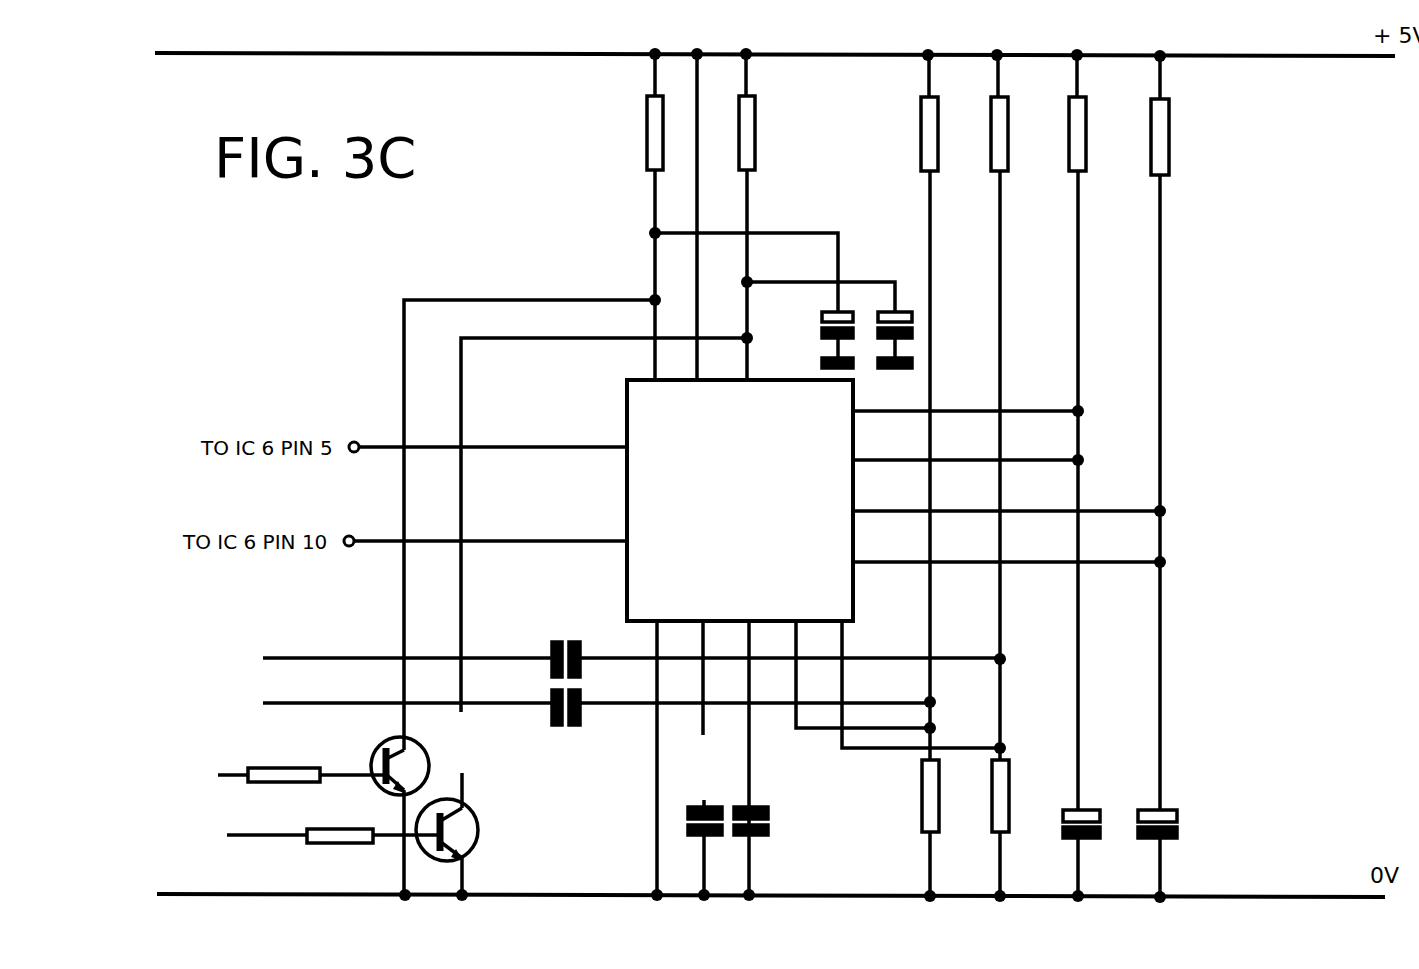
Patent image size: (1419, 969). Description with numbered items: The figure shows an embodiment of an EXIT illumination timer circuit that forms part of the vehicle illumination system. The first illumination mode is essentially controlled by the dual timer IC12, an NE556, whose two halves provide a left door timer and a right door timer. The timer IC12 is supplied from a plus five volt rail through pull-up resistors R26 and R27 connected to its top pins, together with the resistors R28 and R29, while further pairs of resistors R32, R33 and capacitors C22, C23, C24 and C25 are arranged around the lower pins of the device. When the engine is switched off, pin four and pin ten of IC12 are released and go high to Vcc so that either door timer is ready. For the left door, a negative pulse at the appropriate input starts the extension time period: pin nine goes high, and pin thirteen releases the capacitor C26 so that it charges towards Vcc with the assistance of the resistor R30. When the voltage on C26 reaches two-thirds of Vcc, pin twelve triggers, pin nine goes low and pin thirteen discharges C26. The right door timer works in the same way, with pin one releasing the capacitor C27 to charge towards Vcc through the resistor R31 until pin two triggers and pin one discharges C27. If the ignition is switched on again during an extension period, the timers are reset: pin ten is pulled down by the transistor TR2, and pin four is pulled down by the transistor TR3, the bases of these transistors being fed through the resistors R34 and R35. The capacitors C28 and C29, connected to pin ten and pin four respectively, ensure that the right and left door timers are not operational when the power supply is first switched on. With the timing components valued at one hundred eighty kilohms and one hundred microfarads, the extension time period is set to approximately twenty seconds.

The resistor 10K R26 is at (630, 217).
The resistor 10K R27 is at (771, 217).
The resistor 4K7 R28 is at (904, 407).
The resistor 4K7 R29 is at (976, 407).
The resistor R30 is at (1051, 432).
The resistor R31 is at (1190, 433).
The resistor 4K7 R32 is at (1024, 828).
The resistor 4K7 R33 is at (955, 828).
The resistor 10K R34 is at (302, 748).
The resistor 10K R35 is at (333, 859).
The capacitor 10nF C22 is at (631, 638).
The capacitor 10nF C23 is at (596, 726).
The capacitor 100nF C24 is at (705, 758).
The capacitor 100nF C25 is at (788, 827).
The capacitor C26 is at (1108, 826).
The capacitor C27 is at (1189, 822).
The capacitor C28 is at (754, 300).
The capacitor C29 is at (833, 296).
The IC 12 IC12 is at (740, 500).
The transistor TR2 is at (438, 808).
The transistor TR3 is at (485, 834).